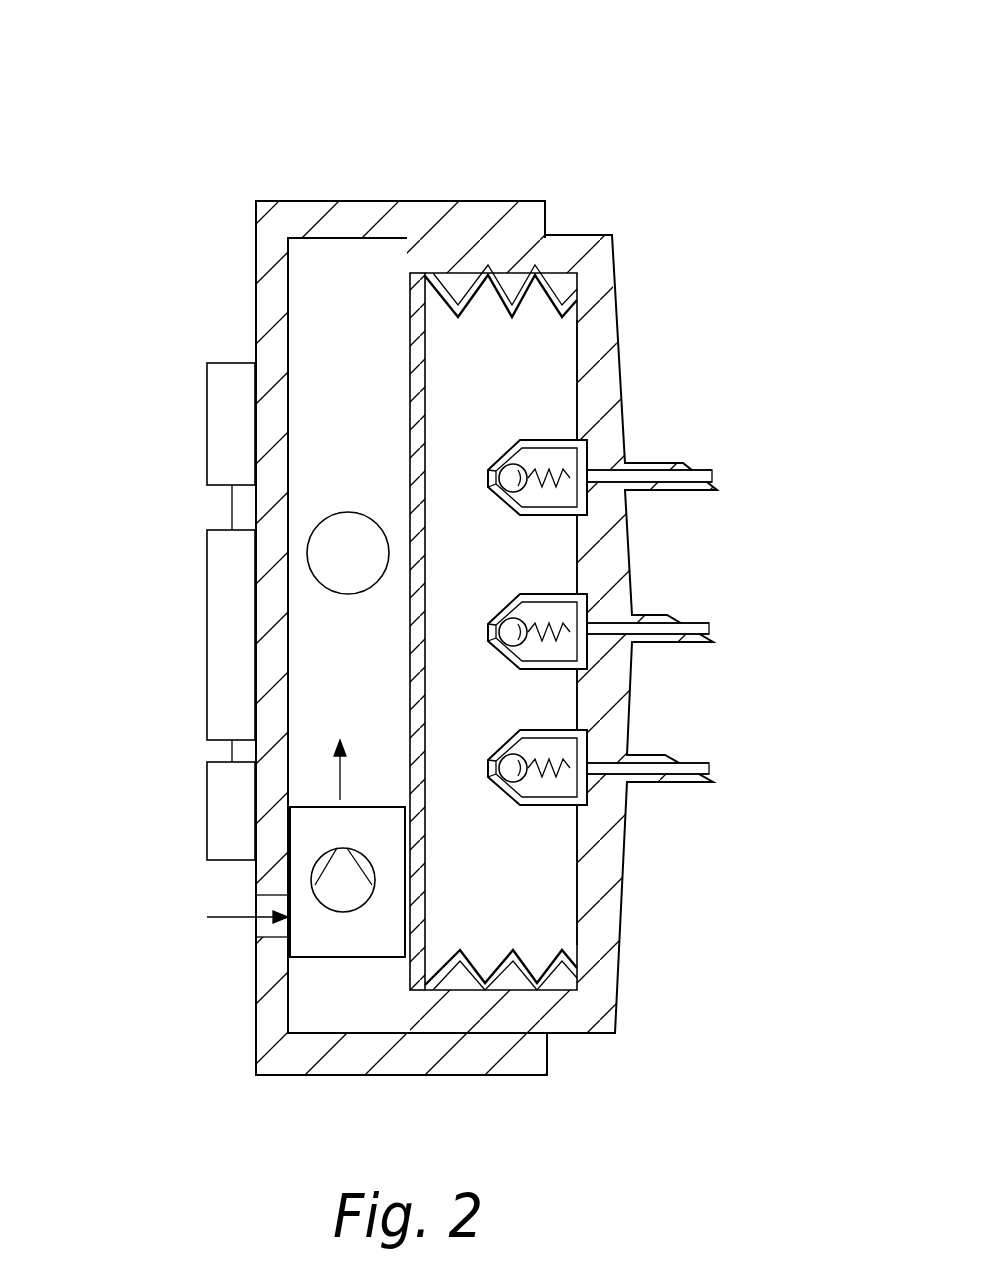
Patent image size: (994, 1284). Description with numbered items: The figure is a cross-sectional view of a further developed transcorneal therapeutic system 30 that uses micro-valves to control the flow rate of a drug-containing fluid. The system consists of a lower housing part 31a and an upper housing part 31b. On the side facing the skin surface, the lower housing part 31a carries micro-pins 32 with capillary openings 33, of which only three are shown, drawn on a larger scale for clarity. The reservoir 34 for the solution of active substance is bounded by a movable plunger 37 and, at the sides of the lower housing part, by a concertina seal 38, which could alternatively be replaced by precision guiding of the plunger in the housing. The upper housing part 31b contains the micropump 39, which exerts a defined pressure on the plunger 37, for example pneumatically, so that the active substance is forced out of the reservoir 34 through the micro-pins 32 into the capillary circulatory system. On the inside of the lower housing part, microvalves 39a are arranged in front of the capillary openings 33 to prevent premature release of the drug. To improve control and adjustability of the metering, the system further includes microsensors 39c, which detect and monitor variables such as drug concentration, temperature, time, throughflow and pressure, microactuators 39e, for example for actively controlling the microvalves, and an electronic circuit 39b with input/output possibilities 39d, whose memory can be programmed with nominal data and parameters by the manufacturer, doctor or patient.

The transcorneal system 30 is at (610, 180).
The lower housing part 31a is at (598, 233).
The upper housing part 31b is at (256, 222).
The micro-pins 32 is at (684, 460).
The capillary openings 33 is at (699, 635).
The reservoir 34 is at (532, 870).
The movable plunger 37 is at (412, 303).
The concertina seal 38 is at (585, 278).
The micropump 39 is at (310, 935).
The microvalves 39a is at (553, 603).
The electronic circuit 39b is at (207, 660).
The microsensors 39c is at (315, 530).
The input/output possibilities 39d is at (207, 390).
The microactuators 39e is at (207, 810).